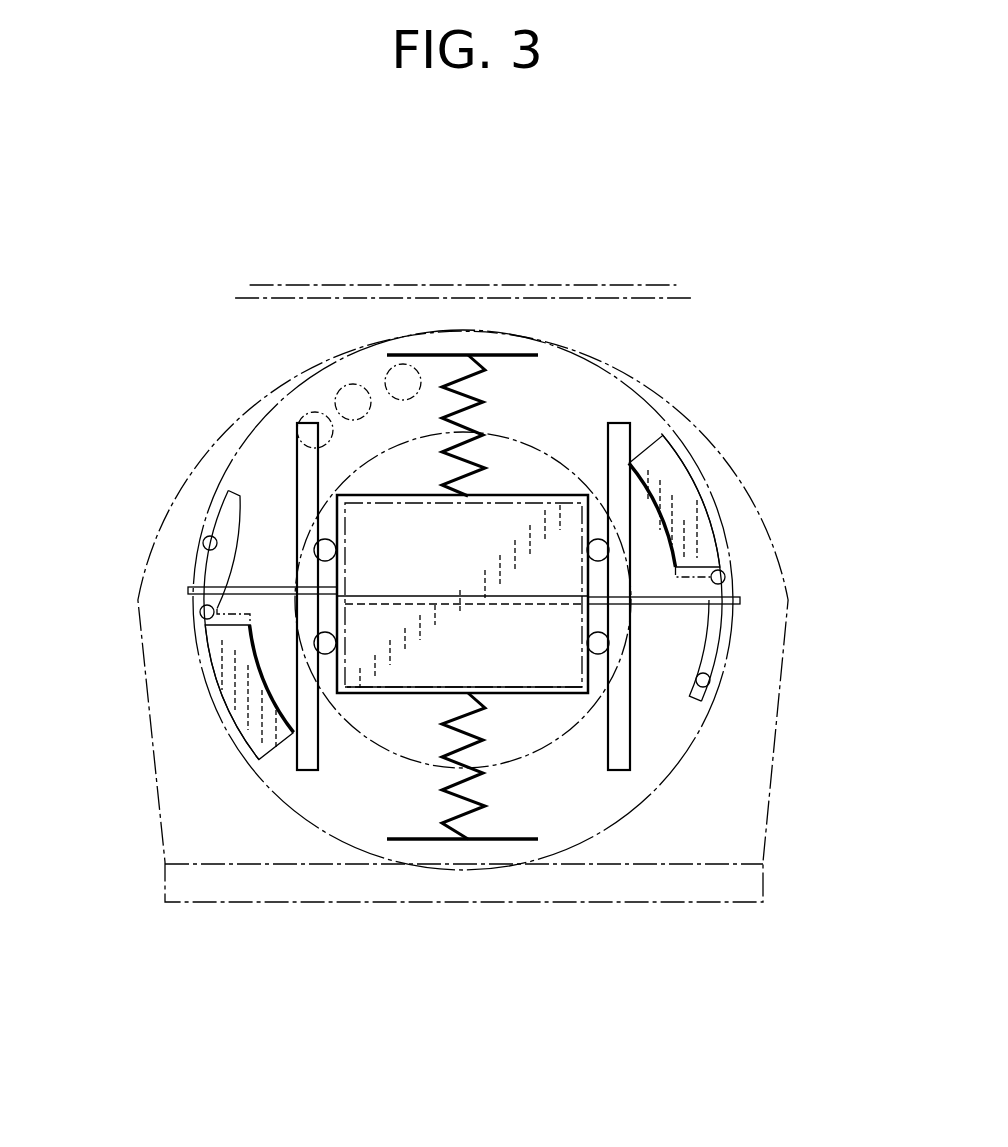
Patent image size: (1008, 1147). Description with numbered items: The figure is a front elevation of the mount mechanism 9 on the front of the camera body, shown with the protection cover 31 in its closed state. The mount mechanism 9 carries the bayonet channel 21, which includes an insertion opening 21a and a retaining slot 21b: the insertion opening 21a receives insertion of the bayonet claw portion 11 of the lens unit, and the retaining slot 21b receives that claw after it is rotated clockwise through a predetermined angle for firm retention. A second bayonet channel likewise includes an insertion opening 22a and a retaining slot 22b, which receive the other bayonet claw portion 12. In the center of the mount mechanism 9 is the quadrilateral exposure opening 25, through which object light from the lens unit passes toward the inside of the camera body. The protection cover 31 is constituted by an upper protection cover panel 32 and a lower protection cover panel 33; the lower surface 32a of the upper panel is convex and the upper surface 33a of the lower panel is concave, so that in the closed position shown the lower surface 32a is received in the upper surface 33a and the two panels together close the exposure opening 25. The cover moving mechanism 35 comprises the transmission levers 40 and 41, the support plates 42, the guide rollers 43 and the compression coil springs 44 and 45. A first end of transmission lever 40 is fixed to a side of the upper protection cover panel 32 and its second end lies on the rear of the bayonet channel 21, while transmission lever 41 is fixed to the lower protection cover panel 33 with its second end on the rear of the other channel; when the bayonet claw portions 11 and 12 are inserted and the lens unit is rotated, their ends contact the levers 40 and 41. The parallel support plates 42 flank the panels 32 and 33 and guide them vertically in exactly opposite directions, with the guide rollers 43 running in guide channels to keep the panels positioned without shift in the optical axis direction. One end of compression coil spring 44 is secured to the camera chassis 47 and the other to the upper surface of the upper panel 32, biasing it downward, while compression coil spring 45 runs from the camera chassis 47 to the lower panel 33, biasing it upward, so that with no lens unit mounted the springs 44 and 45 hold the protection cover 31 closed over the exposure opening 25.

The mount mechanism 9 is at (576, 870).
The bayonet claw portion 11 is at (680, 490).
The bayonet claw portion 12 is at (237, 683).
The bayonet channel 21 is at (258, 758).
The insertion opening 21a is at (200, 612).
The retaining slot 21b is at (203, 543).
The insertion opening 22a is at (725, 576).
The retaining slot 22b is at (710, 683).
The exposure opening 25 is at (555, 515).
The protection cover 31 is at (367, 705).
The upper protection cover panel 32 is at (388, 495).
The lower surface 32a is at (482, 605).
The lower protection cover panel 33 is at (505, 693).
The upper surface 33a is at (462, 596).
The cover moving mechanism 35 is at (287, 440).
The transmission lever 40 is at (188, 590).
The transmission lever 41 is at (742, 602).
The support plate 42 is at (307, 771).
The guide roller 43 is at (322, 546).
The compression coil spring 44 is at (485, 400).
The compression coil spring 45 is at (500, 787).
The camera chassis 47 is at (500, 355).